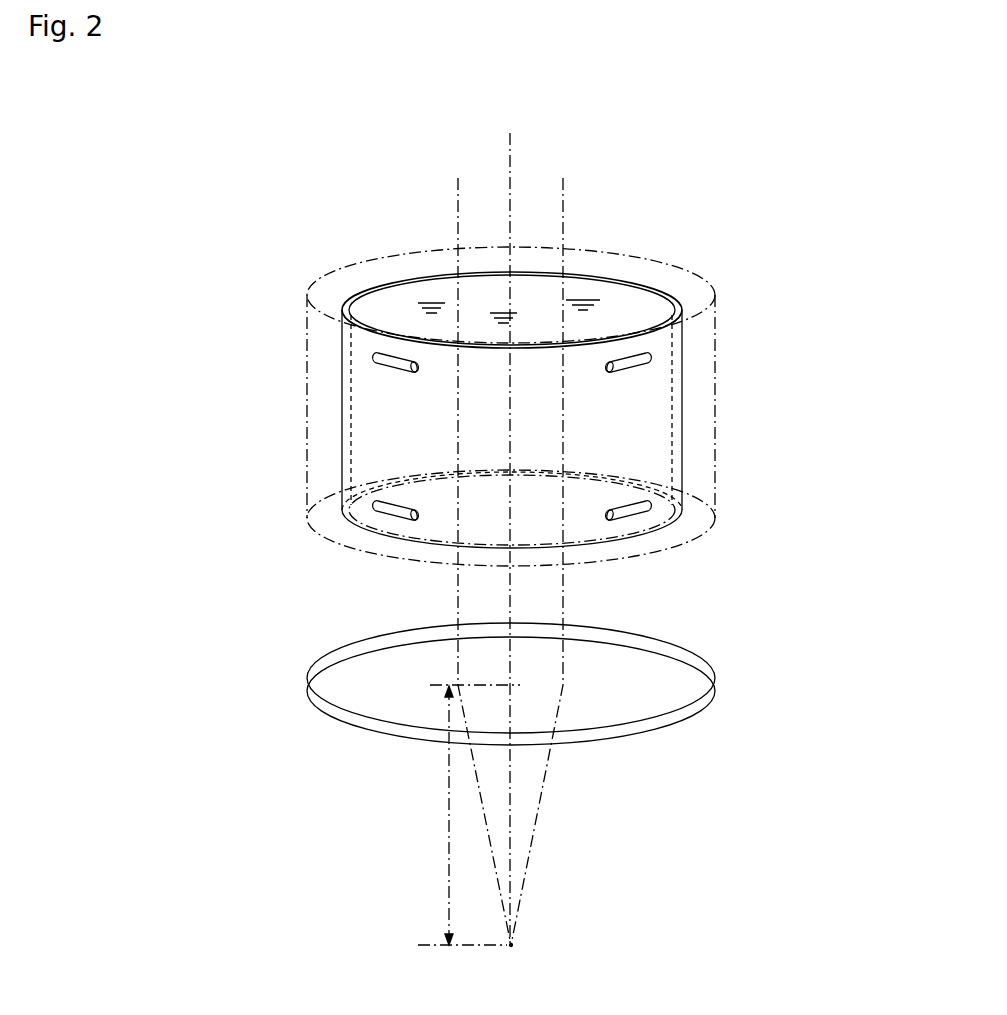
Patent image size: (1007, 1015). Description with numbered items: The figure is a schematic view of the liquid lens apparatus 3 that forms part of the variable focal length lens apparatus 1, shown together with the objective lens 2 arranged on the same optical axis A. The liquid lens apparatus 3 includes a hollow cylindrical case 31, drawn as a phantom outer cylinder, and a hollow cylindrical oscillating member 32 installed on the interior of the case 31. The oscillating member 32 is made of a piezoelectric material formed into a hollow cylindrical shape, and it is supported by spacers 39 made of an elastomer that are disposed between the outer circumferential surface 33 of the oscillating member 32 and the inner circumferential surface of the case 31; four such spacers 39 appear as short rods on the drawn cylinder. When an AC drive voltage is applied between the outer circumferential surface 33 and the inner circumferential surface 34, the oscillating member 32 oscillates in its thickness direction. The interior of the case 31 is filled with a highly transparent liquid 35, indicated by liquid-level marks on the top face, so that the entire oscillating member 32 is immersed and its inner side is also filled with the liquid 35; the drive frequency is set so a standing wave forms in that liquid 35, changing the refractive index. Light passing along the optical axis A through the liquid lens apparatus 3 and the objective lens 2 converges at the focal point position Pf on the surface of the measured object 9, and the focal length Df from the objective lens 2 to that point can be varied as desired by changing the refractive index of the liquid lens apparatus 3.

The variable focal length lens apparatus 1 is at (803, 182).
The objective lens 2 is at (302, 668).
The liquid lens apparatus 3 is at (300, 288).
The measured object 9 is at (420, 945).
The case 31 is at (309, 370).
The oscillating member 32 is at (343, 438).
The outer circumferential surface 33 is at (670, 293).
The inner circumferential surface 34 is at (627, 312).
The liquid 35 is at (578, 300).
The spacers 39 is at (390, 510).
The optical axis A is at (510, 178).
The focal length Df is at (434, 815).
The focal point position Pf is at (512, 945).